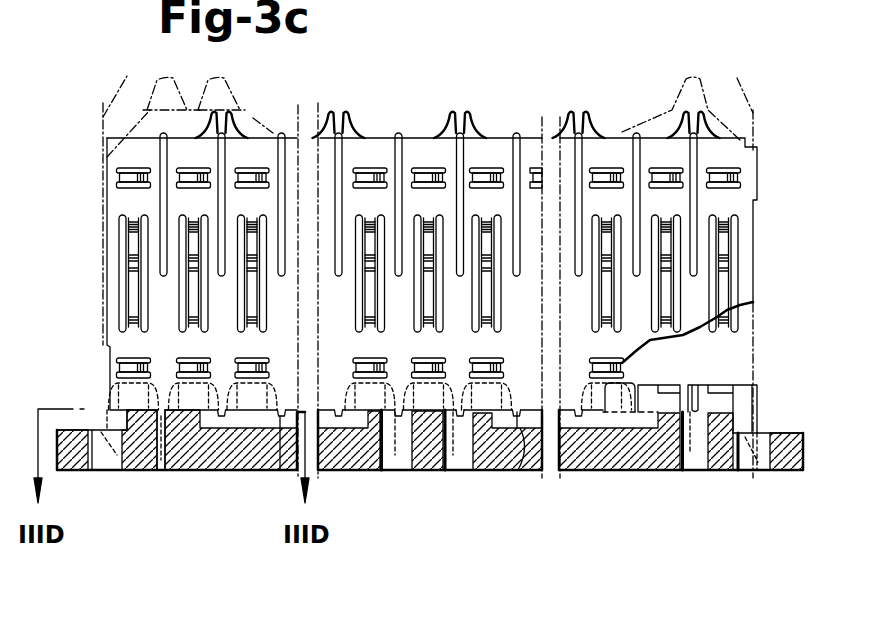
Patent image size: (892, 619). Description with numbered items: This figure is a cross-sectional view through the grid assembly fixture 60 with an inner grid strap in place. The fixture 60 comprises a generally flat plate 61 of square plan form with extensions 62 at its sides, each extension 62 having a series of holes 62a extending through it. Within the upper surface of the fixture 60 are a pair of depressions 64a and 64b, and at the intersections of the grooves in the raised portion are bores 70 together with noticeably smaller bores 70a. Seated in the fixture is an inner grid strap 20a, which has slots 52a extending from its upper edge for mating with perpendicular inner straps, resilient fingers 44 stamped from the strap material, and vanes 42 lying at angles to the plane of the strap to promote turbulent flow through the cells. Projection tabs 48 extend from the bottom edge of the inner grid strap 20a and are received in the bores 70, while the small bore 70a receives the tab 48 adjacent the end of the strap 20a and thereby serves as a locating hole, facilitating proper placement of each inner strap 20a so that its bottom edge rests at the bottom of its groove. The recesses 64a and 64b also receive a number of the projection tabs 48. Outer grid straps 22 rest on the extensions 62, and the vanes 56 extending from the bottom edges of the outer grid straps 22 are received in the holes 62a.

The inner grid strap 20a is at (118, 200).
The outer grid strap 22 is at (760, 370).
The vane 42 is at (240, 118).
The resilient finger 44 is at (130, 287).
The projection tab 48 is at (282, 470).
The slot 52a is at (462, 157).
The vane 56 is at (803, 484).
The grid assembly fixture 60 is at (363, 478).
The flat plate 61 is at (128, 470).
The extension 62 is at (768, 482).
The hole 62a is at (747, 477).
The depression 64a is at (606, 422).
The depression 64b is at (244, 423).
The bore 70 is at (402, 457).
The bore 70a is at (161, 470).